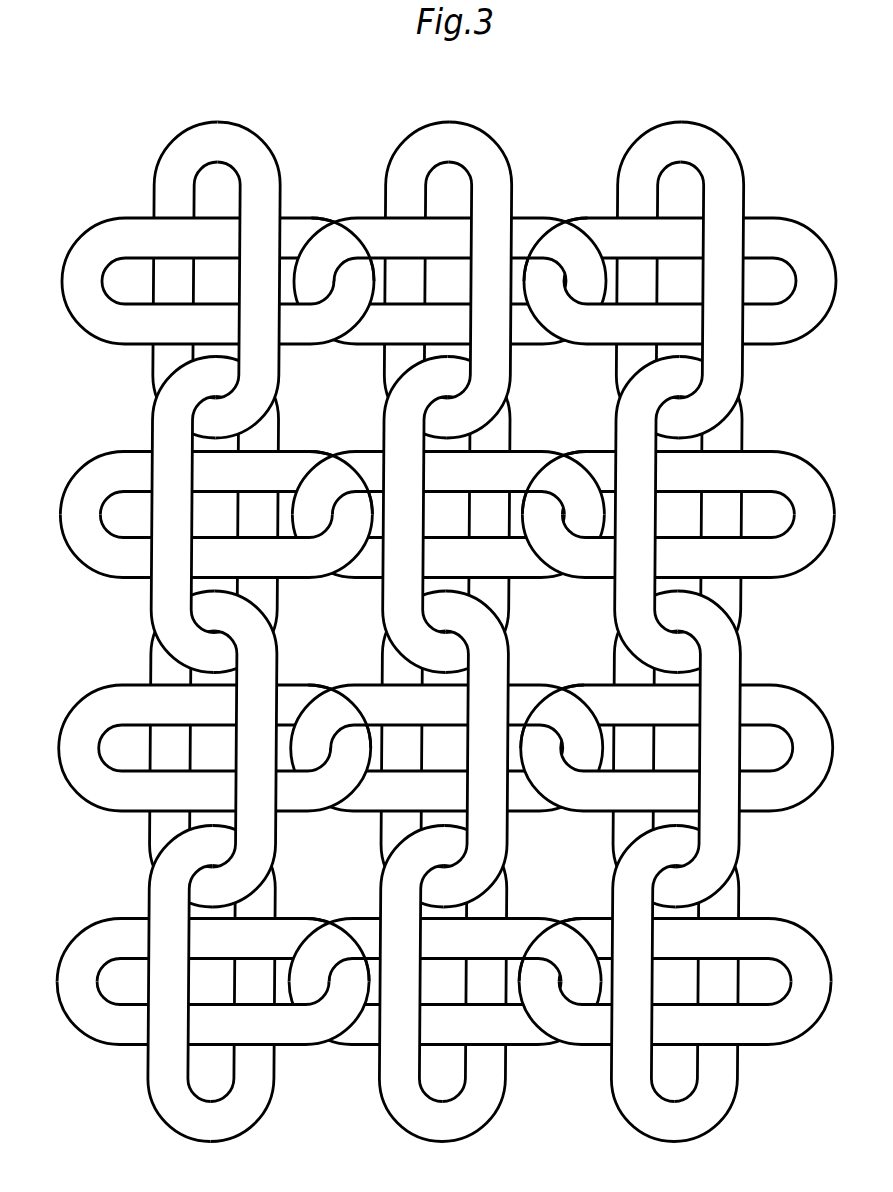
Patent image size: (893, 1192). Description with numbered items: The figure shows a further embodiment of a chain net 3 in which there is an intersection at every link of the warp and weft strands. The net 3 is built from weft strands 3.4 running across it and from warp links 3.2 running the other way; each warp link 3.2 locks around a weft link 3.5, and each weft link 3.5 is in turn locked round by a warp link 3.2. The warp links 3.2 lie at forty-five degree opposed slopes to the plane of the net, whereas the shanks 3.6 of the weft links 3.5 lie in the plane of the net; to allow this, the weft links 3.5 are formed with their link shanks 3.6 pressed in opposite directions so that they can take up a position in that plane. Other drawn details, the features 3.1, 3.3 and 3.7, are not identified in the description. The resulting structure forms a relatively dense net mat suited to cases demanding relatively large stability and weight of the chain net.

The net 3 is at (447, 603).
The vertical chain link 3.1 is at (441, 111).
The warp link 3.2 is at (511, 172).
The link interconnection 3.3 is at (392, 362).
The weft strands 3.4 is at (817, 210).
The weft link 3.5 is at (800, 808).
The link shanks 3.6 is at (713, 468).
The link end bend 3.7 is at (812, 522).